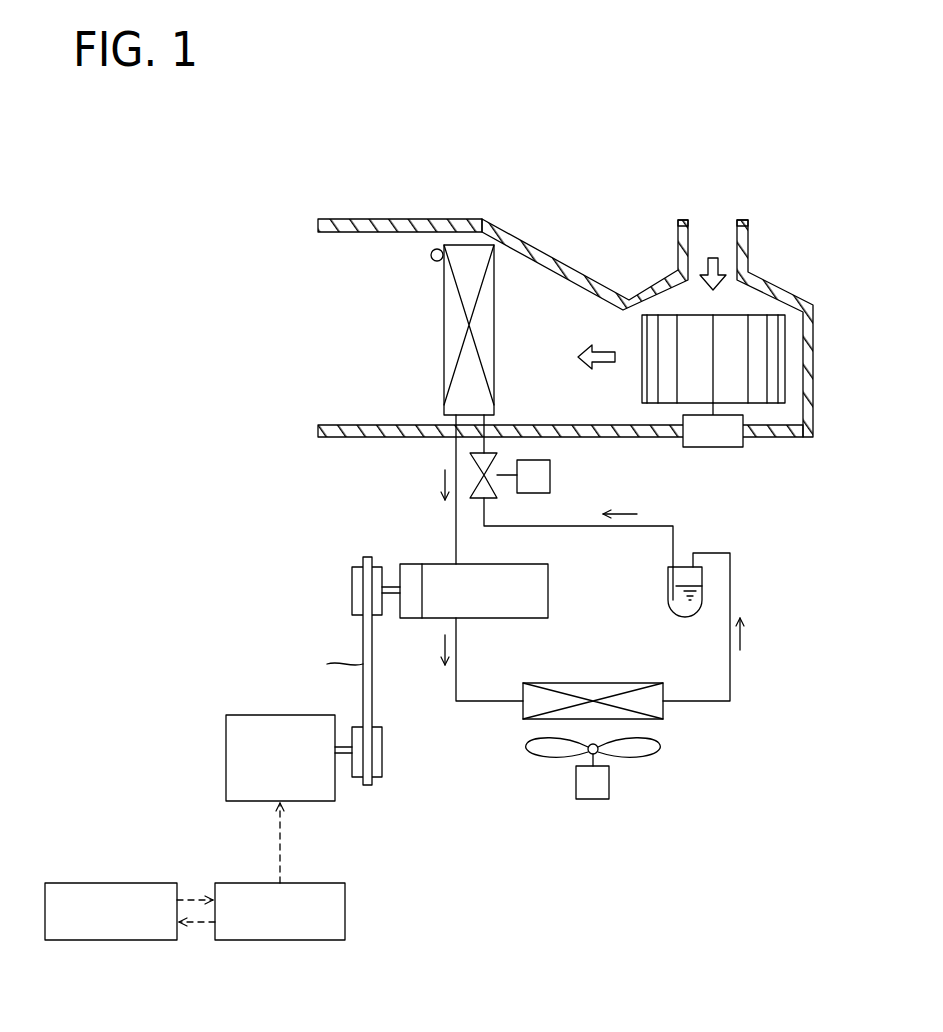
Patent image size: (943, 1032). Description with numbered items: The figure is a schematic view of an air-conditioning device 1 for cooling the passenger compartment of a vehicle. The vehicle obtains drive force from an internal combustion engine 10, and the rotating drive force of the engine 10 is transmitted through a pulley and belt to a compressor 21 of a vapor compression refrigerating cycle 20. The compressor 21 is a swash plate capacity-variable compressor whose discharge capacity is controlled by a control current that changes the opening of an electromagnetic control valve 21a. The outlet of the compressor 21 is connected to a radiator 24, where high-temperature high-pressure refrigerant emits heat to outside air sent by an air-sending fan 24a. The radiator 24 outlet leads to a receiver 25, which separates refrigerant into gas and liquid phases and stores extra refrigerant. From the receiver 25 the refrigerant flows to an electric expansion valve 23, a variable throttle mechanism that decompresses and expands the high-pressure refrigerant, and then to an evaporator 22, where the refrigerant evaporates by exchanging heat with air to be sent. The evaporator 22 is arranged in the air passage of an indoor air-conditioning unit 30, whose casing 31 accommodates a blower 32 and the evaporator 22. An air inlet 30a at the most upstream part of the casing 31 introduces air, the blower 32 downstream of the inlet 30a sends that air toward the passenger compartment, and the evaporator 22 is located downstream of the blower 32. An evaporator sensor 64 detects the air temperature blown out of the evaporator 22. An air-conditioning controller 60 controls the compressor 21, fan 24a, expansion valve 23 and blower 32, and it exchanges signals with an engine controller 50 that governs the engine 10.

The air-conditioning device 1 is at (266, 245).
The internal combustion engine 10 is at (248, 715).
The vapor compression refrigerating cycle 20 is at (741, 706).
The compressor 21 is at (440, 562).
The electromagnetic control valve 21a is at (410, 562).
The evaporator 22 is at (495, 350).
The electric expansion valve 23 is at (497, 455).
The radiator 24 is at (555, 683).
The air-sending fan 24a is at (645, 762).
The receiver 25 is at (666, 592).
The indoor air-conditioning unit 30 is at (643, 272).
The air inlet 30a is at (736, 222).
The casing 31 is at (352, 219).
The blower 32 is at (786, 380).
The engine controller 50 is at (280, 941).
The air-conditioning controller 60 is at (130, 941).
The evaporator sensor 64 is at (437, 249).